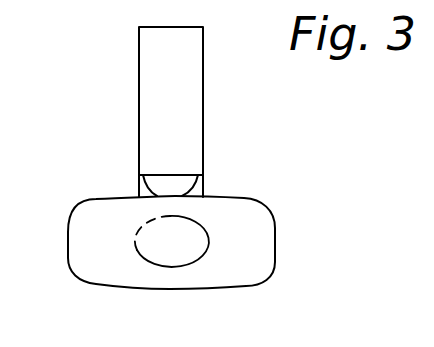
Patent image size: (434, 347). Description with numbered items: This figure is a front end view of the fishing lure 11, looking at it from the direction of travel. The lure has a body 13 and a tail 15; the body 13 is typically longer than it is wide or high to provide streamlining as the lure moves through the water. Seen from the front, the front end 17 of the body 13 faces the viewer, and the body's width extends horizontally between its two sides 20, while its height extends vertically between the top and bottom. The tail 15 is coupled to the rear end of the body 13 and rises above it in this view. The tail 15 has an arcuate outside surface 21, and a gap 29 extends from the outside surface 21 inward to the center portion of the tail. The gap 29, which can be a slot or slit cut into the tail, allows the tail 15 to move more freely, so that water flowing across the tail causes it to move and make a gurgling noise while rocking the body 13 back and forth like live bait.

The fishing lure 11 is at (281, 146).
The body 13 is at (100, 198).
The tail 15 is at (158, 68).
The front end 17 is at (163, 255).
The sides 20 is at (155, 113).
The outside surface 21 is at (177, 115).
The gap 29 is at (178, 185).